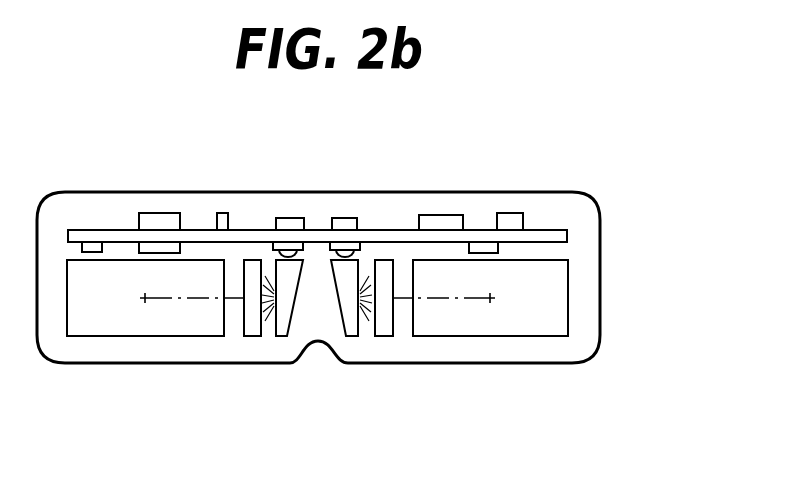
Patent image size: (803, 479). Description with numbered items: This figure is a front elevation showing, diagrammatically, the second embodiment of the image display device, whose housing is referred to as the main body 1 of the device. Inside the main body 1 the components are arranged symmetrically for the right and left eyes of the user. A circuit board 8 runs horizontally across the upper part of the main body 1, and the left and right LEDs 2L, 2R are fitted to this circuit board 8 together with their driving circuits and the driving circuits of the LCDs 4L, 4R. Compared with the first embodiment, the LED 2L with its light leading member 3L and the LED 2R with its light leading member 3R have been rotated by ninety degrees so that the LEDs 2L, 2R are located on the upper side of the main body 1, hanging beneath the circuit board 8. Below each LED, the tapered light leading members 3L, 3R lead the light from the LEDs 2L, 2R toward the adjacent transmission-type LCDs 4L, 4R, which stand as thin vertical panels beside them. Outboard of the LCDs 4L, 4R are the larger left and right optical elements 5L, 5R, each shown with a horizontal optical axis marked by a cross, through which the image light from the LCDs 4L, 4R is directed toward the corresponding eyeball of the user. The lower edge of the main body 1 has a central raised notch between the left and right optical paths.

The main body of the device 1 is at (614, 262).
The circuit board 8 is at (480, 234).
The left LED 2L is at (296, 250).
The right LED 2R is at (350, 250).
The left light leading member 3L is at (286, 326).
The right light leading member 3R is at (353, 326).
The left LCD 4L is at (252, 330).
The right LCD 4R is at (383, 328).
The left optical element 5L is at (91, 328).
The right optical element 5R is at (540, 320).